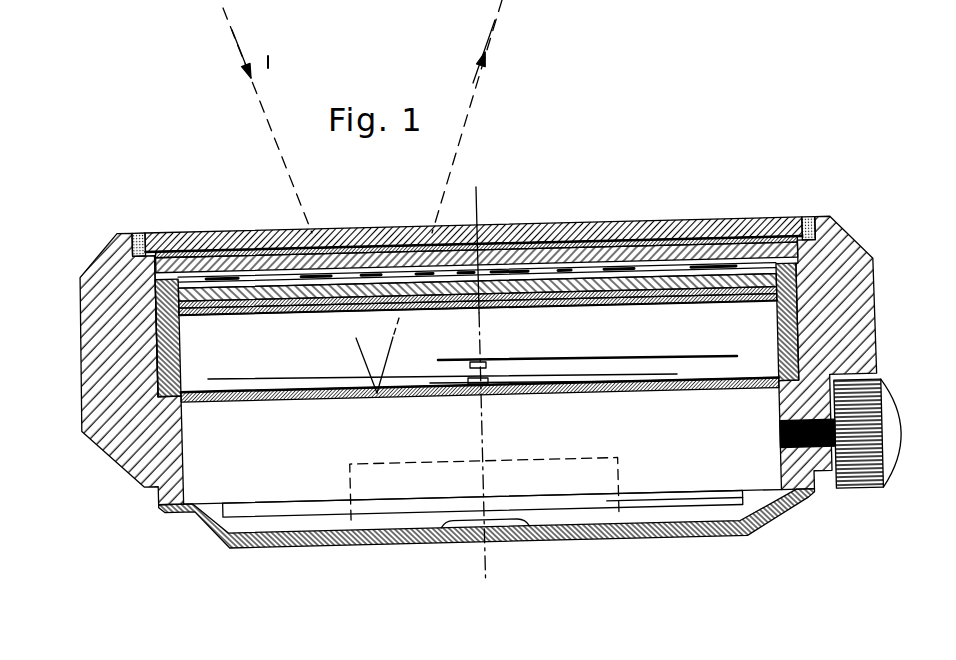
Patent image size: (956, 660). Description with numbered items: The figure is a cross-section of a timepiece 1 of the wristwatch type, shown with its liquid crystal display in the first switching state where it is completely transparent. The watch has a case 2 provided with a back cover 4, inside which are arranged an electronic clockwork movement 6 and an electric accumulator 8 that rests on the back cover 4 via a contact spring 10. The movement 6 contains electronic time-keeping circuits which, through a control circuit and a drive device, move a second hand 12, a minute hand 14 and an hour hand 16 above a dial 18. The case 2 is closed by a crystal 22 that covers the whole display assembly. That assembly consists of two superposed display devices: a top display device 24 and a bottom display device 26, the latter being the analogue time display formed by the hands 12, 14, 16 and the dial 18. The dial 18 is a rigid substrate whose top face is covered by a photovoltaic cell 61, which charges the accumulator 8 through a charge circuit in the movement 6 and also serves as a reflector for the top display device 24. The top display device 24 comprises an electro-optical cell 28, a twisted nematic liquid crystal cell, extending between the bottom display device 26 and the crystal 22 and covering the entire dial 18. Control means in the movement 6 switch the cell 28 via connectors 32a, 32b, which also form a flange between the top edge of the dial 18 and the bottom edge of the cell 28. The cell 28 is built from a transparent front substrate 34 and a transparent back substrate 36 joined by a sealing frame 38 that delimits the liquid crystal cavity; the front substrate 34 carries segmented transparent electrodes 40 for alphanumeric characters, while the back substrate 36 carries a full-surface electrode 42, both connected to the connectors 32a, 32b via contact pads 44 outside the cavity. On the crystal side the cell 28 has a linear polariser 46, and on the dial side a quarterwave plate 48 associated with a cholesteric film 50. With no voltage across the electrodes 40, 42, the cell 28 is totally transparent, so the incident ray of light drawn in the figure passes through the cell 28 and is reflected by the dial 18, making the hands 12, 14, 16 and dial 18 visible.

The timepiece 1 is at (136, 200).
The case 2 is at (123, 380).
The back cover 4 is at (583, 537).
The electronic clockwork movement 6 is at (692, 460).
The electric accumulator 8 is at (388, 500).
The contact spring 10 is at (447, 537).
The second hand 12 is at (602, 366).
The minute hand 14 is at (580, 379).
The hour hand 16 is at (654, 374).
The dial 18 is at (696, 397).
The crystal 22 is at (540, 222).
The top display device 24 is at (585, 152).
The bottom display device 26 is at (570, 432).
The electro-optical cell 28 is at (221, 250).
The connector 32a is at (781, 338).
The connector 32b is at (178, 352).
The transparent front substrate 34 is at (594, 221).
The transparent back substrate 36 is at (765, 217).
The sealing frame 38 is at (815, 216).
The transparent electrodes 40 is at (659, 220).
The transparent electrode 42 is at (718, 219).
The contact pads 44 is at (157, 310).
The linear polariser 46 is at (262, 262).
The quarterwave plate 48 is at (604, 305).
The cholesteric film 50 is at (645, 303).
The photovoltaic cell 61 is at (318, 386).